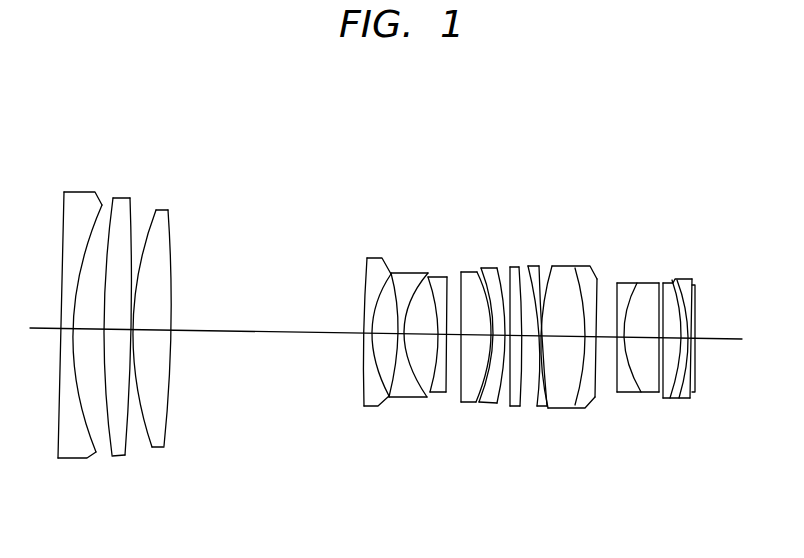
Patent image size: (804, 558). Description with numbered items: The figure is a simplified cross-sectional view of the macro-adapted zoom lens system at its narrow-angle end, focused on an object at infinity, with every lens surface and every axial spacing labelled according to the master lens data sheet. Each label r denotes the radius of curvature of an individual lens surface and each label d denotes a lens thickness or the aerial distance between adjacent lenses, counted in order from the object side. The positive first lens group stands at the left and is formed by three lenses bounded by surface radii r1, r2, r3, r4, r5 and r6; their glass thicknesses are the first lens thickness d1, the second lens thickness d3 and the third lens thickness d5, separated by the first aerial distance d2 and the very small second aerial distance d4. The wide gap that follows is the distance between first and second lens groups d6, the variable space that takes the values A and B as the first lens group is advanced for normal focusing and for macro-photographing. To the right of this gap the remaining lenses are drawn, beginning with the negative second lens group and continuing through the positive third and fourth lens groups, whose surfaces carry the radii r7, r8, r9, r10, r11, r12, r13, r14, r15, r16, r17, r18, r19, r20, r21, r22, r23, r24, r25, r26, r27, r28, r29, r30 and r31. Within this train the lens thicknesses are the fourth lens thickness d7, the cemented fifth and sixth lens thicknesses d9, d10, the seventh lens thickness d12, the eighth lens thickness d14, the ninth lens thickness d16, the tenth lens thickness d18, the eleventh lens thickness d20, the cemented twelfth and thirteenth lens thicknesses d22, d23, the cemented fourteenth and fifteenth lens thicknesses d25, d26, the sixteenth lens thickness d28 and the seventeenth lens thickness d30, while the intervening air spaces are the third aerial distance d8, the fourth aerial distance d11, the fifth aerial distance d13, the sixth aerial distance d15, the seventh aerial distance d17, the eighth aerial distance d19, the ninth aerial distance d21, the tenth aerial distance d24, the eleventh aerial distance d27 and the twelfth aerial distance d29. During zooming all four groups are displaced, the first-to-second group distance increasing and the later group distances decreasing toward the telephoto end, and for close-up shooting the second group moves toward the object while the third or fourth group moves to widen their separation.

The first surface radius of curvature r1 is at (64, 203).
The second surface radius of curvature r2 is at (102, 205).
The third surface radius of curvature r3 is at (113, 198).
The fourth surface radius of curvature r4 is at (132, 199).
The fifth surface radius of curvature r5 is at (157, 211).
The sixth surface radius of curvature r6 is at (171, 228).
The seventh surface radius of curvature r7 is at (366, 272).
The eighth surface radius of curvature r8 is at (379, 277).
The ninth surface radius of curvature r9 is at (396, 273).
The tenth surface radius of curvature r10 is at (411, 275).
The eleventh surface radius of curvature r11 is at (433, 277).
The twelfth surface radius of curvature r12 is at (446, 279).
The thirteenth surface radius of curvature r13 is at (464, 271).
The fourteenth surface radius of curvature r14 is at (478, 270).
The fifteenth surface radius of curvature r15 is at (492, 267).
The sixteenth surface radius of curvature r16 is at (500, 266).
The seventeenth surface radius of curvature r17 is at (512, 266).
The eighteenth surface radius of curvature r18 is at (521, 266).
The nineteenth surface radius of curvature r19 is at (530, 265).
The twentieth surface radius of curvature r20 is at (541, 265).
The twenty-first surface radius of curvature r21 is at (553, 265).
The twenty-second surface radius of curvature r22 is at (574, 268).
The twenty-third surface radius of curvature r23 is at (595, 273).
The twenty-fourth surface radius of curvature r24 is at (618, 283).
The twenty-fifth surface radius of curvature r25 is at (637, 284).
The twenty-sixth surface radius of curvature r26 is at (659, 283).
The twenty-seventh surface radius of curvature r27 is at (668, 282).
The twenty-eighth surface radius of curvature r28 is at (690, 281).
The twenty-ninth surface radius of curvature r29 is at (694, 285).
The thirtieth surface radius of curvature r30 is at (698, 289).
The thirty-first surface radius of curvature r31 is at (703, 293).
The first lens thickness d1 is at (63, 328).
The first aerial distance d2 is at (88, 329).
The second lens thickness d3 is at (115, 329).
The second aerial distance d4 is at (134, 330).
The third lens thickness d5 is at (156, 330).
The distance between first and second lens groups d6 is at (250, 331).
The fourth lens thickness d7 is at (369, 333).
The third aerial distance d8 is at (380, 333).
The fifth lens thickness d9 is at (401, 334).
The sixth lens thickness d10 is at (421, 334).
The fourth aerial distance d11 is at (442, 334).
The seventh lens thickness d12 is at (453, 334).
The fifth aerial distance d13 is at (475, 335).
The eighth lens thickness d14 is at (492, 335).
The sixth aerial distance d15 is at (499, 335).
The ninth lens thickness d16 is at (507, 335).
The seventh aerial distance d17 is at (516, 336).
The tenth lens thickness d18 is at (530, 336).
The eighth aerial distance d19 is at (540, 336).
The eleventh lens thickness d20 is at (545, 336).
The ninth aerial distance d21 is at (563, 336).
The twelfth lens thickness d22 is at (590, 337).
The thirteenth lens thickness d23 is at (606, 337).
The tenth aerial distance d24 is at (620, 337).
The fourteenth lens thickness d25 is at (641, 337).
The fifteenth lens thickness d26 is at (660, 338).
The eleventh aerial distance d27 is at (671, 338).
The sixteenth lens thickness d28 is at (684, 338).
The twelfth aerial distance d29 is at (689, 338).
The seventeenth lens thickness d30 is at (693, 338).